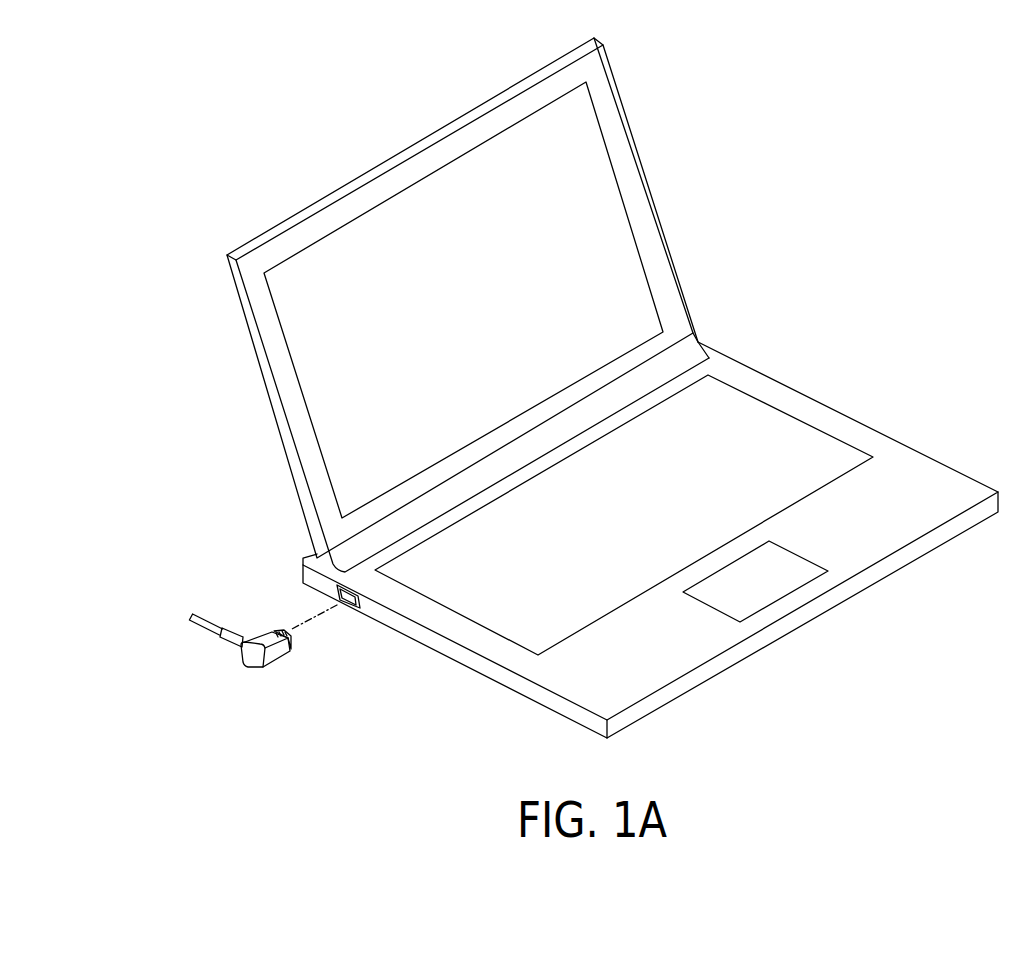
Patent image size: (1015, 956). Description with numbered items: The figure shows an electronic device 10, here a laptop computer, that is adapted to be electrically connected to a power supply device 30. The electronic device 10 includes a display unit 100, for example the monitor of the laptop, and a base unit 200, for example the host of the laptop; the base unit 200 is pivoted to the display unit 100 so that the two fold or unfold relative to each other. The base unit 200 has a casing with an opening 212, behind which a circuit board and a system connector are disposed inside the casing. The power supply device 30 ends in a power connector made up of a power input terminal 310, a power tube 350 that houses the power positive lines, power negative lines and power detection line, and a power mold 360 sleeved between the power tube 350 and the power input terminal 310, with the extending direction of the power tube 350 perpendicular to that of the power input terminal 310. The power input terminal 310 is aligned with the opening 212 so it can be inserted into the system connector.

The electronic device 10 is at (882, 627).
The display unit 100 is at (600, 245).
The base unit 200 is at (778, 437).
The opening 212 is at (350, 600).
The power supply device 30 is at (238, 620).
The power input terminal 310 is at (285, 650).
The power tube 350 is at (215, 633).
The power mold 360 is at (252, 663).